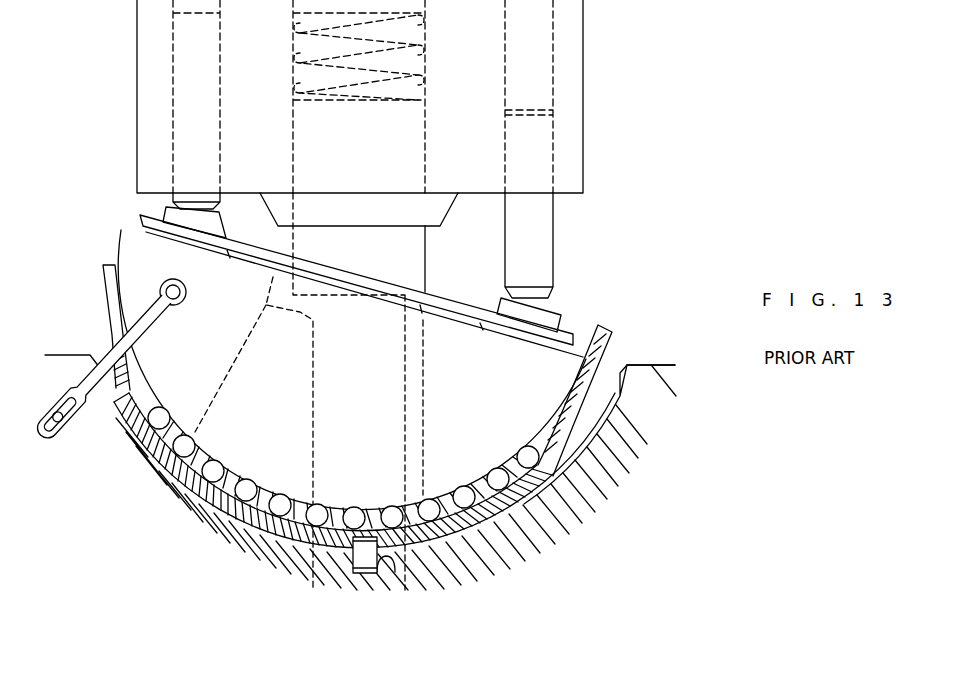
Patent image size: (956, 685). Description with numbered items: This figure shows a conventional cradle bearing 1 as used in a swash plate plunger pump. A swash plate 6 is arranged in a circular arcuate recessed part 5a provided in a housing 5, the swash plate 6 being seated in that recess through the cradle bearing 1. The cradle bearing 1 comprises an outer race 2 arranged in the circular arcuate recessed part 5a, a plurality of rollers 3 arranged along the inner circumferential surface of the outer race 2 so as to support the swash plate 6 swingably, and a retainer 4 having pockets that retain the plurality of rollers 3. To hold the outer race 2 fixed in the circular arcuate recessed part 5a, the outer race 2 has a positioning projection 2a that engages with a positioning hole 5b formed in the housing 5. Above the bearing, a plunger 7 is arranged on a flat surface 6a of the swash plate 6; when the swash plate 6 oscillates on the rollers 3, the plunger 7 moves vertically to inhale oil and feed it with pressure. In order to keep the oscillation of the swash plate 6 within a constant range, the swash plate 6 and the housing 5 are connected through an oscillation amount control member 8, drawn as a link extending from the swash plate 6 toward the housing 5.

The cradle bearing 1 is at (72, 270).
The outer race 2 is at (187, 448).
The positioning projection 2a is at (360, 560).
The rollers 3 is at (152, 463).
The retainer 4 is at (110, 423).
The housing 5 is at (437, 568).
The circular arcuate recessed part 5a is at (620, 372).
The positioning hole 5b is at (380, 562).
The swash plate 6 is at (560, 340).
The flat surface 6a is at (452, 282).
The plunger 7 is at (533, 156).
The oscillation amount control member 8 is at (80, 395).